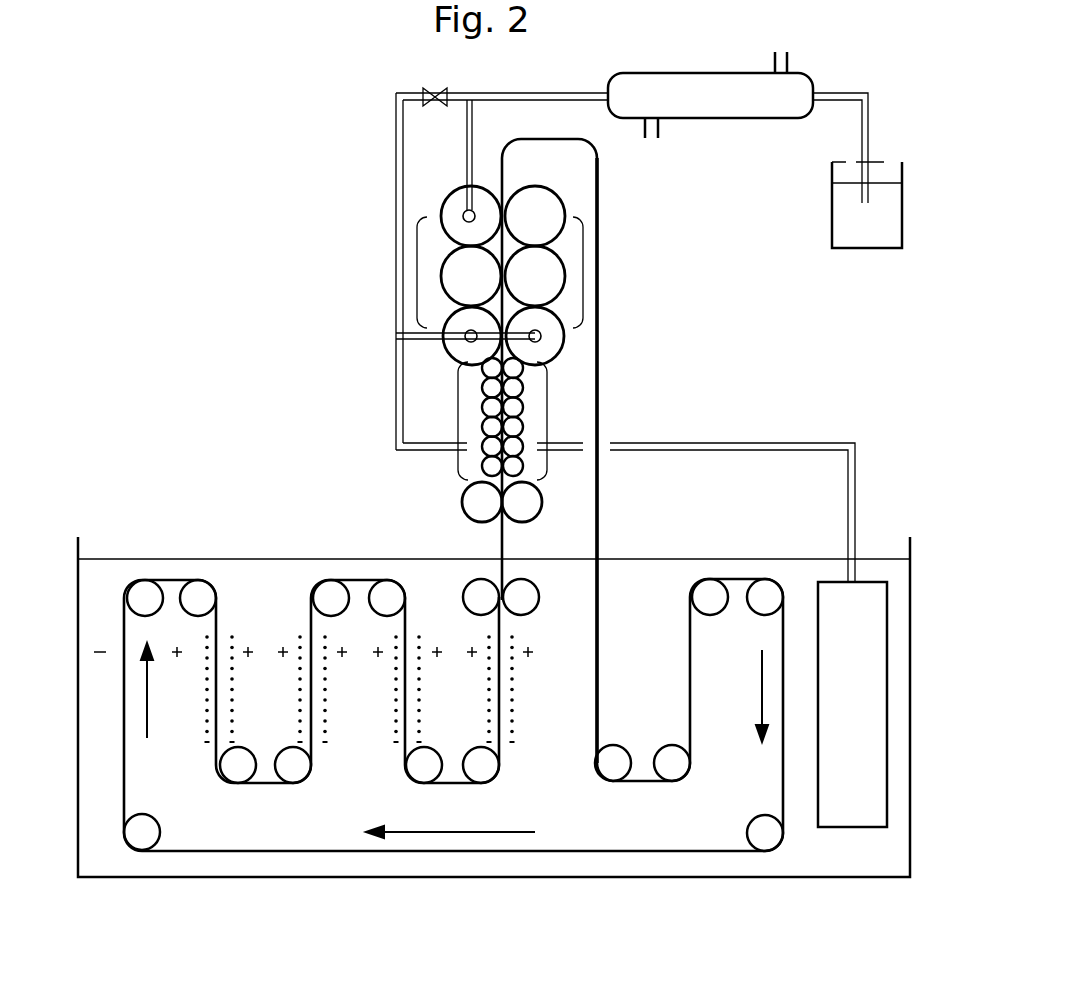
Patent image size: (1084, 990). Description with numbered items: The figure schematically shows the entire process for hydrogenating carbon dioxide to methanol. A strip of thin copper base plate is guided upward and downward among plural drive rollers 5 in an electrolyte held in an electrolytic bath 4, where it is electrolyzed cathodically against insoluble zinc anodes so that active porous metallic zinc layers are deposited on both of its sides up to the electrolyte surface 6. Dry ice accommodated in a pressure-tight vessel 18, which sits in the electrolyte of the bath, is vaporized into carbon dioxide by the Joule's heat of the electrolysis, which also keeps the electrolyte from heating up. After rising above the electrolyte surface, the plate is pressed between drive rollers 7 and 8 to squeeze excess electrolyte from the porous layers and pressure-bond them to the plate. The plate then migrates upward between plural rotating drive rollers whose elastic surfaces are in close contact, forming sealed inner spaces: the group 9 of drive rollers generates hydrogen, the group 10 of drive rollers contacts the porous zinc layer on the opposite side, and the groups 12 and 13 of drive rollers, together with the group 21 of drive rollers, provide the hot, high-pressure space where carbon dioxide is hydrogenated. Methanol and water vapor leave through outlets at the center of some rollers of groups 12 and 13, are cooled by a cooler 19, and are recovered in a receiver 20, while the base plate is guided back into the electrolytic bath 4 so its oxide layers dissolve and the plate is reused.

The electrolytic bath 4 is at (78, 537).
The drive rollers 5 is at (207, 580).
The electrolyte surface 6 is at (493, 557).
The drive roller 7 is at (460, 500).
The drive roller 8 is at (545, 505).
The group of drive rollers for generation of hydrogen 9 is at (466, 419).
The group of drive rollers 10 is at (544, 419).
The group of drive rollers for reaction 12 is at (410, 295).
The group of drive rollers for reaction 13 is at (587, 295).
The pressure-tight vessel 18 is at (870, 580).
The cooler 19 is at (750, 118).
The receiver 20 is at (862, 248).
The group of drive rollers for reaction 21 is at (559, 323).